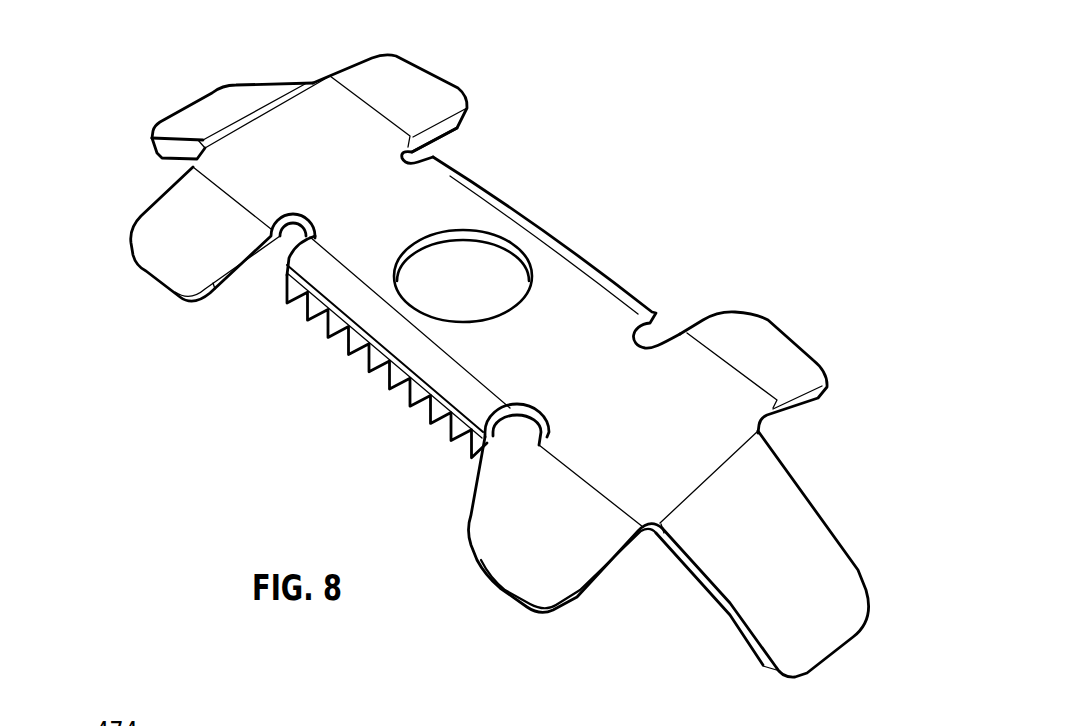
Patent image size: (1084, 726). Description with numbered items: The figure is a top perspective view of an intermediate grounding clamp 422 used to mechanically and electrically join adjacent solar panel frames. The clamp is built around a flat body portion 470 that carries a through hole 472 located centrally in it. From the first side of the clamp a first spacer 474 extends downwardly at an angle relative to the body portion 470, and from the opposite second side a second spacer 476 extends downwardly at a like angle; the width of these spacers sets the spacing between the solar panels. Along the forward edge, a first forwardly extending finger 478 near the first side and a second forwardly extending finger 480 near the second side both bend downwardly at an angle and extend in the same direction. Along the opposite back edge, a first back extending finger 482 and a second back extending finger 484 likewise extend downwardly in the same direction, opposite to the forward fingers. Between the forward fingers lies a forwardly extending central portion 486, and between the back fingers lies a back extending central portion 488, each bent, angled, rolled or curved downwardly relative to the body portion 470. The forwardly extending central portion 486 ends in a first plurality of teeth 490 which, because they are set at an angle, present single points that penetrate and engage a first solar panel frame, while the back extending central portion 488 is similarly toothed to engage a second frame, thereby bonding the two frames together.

The intermediate grounding clamp 422 is at (842, 87).
The body portion 470 is at (583, 294).
The through hole 472 is at (462, 235).
The first spacer 474 is at (208, 117).
The second spacer 476 is at (820, 568).
The first forwardly extending finger 478 is at (177, 250).
The second forwardly extending finger 480 is at (527, 550).
The first back extending finger 482 is at (385, 77).
The second back extending finger 484 is at (778, 355).
The forwardly extending central portion 486 is at (343, 295).
The back extending central portion 488 is at (536, 231).
The first plurality of teeth 490 is at (411, 396).